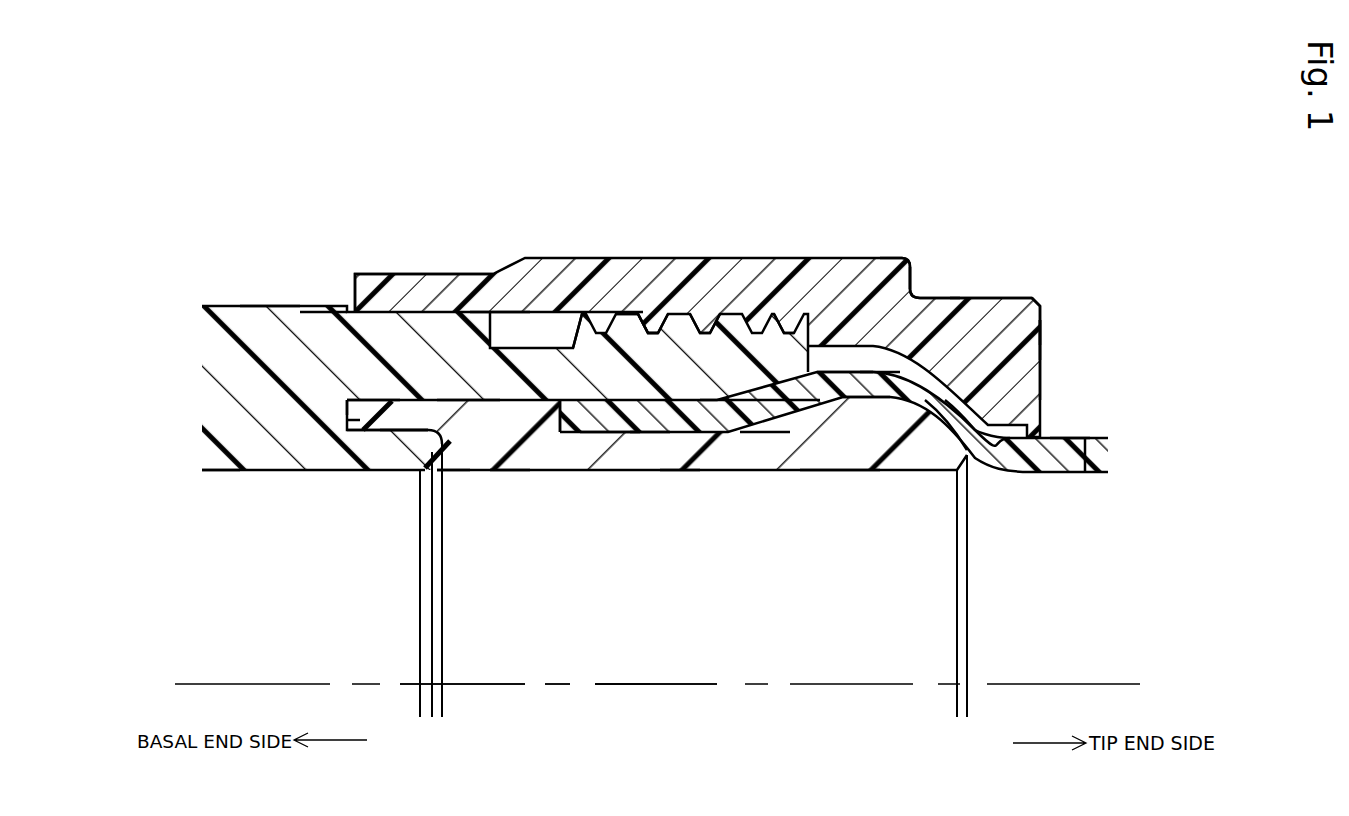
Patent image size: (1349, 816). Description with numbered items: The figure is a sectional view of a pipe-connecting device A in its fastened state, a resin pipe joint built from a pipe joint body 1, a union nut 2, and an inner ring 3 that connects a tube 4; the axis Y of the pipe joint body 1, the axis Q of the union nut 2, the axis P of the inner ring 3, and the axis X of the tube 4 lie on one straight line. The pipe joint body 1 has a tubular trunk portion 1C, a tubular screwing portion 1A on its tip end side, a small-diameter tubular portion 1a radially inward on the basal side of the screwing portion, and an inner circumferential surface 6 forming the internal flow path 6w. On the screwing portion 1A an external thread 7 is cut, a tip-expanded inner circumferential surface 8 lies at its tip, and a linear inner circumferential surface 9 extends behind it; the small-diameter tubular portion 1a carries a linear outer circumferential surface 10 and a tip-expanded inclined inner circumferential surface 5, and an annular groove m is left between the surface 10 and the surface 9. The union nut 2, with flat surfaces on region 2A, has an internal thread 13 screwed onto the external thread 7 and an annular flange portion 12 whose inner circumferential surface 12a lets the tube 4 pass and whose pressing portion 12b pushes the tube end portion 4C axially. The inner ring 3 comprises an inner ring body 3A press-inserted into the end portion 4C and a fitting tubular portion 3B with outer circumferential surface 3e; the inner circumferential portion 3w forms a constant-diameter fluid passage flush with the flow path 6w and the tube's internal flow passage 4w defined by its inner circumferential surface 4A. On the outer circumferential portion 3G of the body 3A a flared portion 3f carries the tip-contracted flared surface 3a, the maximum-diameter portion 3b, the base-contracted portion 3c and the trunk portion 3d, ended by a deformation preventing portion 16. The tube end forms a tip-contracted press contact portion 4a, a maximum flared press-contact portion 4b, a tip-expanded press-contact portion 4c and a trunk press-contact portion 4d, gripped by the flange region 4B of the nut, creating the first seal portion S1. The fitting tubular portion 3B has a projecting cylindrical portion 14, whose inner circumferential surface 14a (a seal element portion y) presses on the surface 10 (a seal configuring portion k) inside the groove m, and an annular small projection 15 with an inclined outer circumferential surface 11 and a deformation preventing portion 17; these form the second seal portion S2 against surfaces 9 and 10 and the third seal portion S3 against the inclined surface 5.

The pipe joint body 1 is at (216, 298).
The tubular trunk portion 1C is at (244, 320).
The tubular screwing portion 1A is at (612, 362).
The small-diameter tubular portion 1a is at (398, 442).
The union nut 2 is at (898, 254).
The shell flange 2A is at (410, 284).
The inner ring 3 is at (708, 474).
The tip-contracted outer-circumferential flared surface 3a is at (1028, 345).
The maximum-diameter portion 3b is at (920, 312).
The base-contracted outer circumferential portion 3c is at (810, 330).
The trunk outer-circumferential portion 3d is at (658, 358).
The outer circumferential surface 3e is at (490, 325).
The flared portion 3f is at (950, 340).
The inner circumferential portion 3w is at (680, 455).
The inner ring body 3A is at (830, 460).
The fitting tubular portion 3B is at (567, 468).
The outer circumferential portion 3G is at (638, 335).
The tube 4 is at (1074, 434).
The tip-contracted press contact portion 4a is at (945, 442).
The maximum flared press-contact portion 4b is at (885, 384).
The tip-expanded press-contact portion 4c is at (750, 404).
The trunk press-contact portion 4d is at (590, 430).
The internal flow passage 4w is at (1095, 462).
The inner circumferential surface 4A is at (852, 402).
The sheath bulge portion 4B is at (838, 375).
The end portion 4C is at (972, 402).
The inclined inner circumferential surface 5 is at (452, 468).
The inner circumferential surface 6 is at (212, 471).
The internal flow path 6w is at (234, 628).
The external thread 7 is at (580, 335).
The tip-expanded inner circumferential surface 8 is at (762, 432).
The linear inner circumferential surface 9 is at (646, 446).
The linear outer circumferential surface 10 is at (366, 392).
The inclined outer circumferential surface 11 is at (470, 398).
The annular flange portion 12 is at (1043, 333).
The inner circumferential surface 12a is at (1070, 445).
The pressing portion 12b is at (995, 440).
The internal thread 13 is at (797, 430).
The projecting cylindrical portion 14 is at (352, 420).
The inner circumferential surface 14a is at (380, 432).
The annular small projection 15 is at (505, 466).
The deformation preventing portion 16 is at (968, 452).
The deformation preventing portion 17 is at (428, 462).
The first seal portion S1 is at (1003, 350).
The second seal portion S2 is at (330, 350).
The third seal portion S3 is at (425, 452).
The annular groove m is at (364, 394).
The seal configuring portion k is at (420, 452).
The seal element portion y is at (365, 431).
The pipe-connecting device A is at (1074, 196).
The axis of the tube X is at (650, 686).
The axis of the pipe joint body Y is at (482, 686).
The axis of the inner ring P is at (607, 686).
The axis of the union nut Q is at (567, 686).